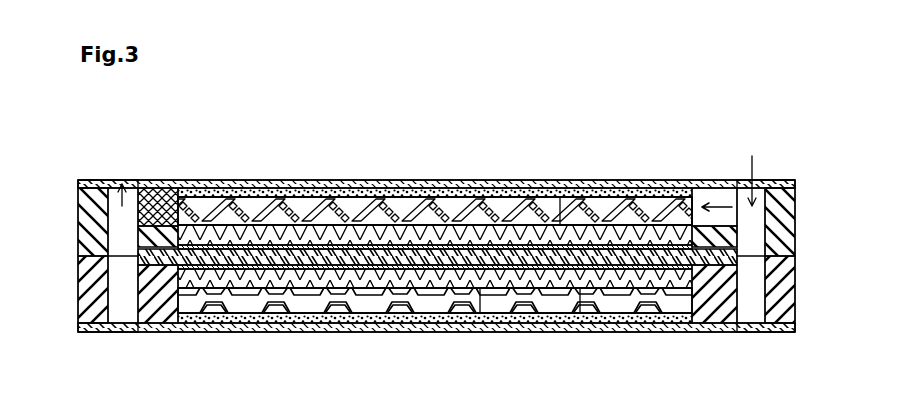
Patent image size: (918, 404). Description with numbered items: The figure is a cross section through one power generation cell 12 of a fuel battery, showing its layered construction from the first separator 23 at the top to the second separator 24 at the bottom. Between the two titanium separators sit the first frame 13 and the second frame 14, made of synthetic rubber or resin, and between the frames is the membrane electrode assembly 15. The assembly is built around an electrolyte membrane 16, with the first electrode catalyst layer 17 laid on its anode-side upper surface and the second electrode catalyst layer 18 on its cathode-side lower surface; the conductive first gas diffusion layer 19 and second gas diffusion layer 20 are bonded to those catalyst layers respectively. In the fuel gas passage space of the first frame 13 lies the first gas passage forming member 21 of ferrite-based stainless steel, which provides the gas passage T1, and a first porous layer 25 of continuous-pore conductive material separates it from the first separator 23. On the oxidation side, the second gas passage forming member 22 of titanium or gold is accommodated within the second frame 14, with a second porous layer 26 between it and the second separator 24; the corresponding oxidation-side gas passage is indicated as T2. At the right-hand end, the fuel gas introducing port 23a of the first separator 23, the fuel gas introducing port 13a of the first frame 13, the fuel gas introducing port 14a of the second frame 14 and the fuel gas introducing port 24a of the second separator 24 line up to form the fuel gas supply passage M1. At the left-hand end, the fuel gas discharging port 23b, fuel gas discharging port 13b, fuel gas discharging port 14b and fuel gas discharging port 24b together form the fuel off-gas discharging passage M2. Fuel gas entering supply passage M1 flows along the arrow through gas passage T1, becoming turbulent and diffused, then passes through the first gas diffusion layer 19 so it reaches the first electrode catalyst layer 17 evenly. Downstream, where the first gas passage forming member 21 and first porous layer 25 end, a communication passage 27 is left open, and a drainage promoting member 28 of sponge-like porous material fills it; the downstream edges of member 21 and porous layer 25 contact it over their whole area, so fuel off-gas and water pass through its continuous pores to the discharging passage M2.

The power generation cell 12 is at (553, 168).
The first frame 13 is at (441, 201).
The fuel gas introducing port 13a is at (781, 190).
The fuel gas discharging port 13b is at (110, 193).
The second frame 14 is at (442, 313).
The fuel gas introducing port 14a is at (800, 310).
The fuel gas discharging port 14b is at (116, 326).
The membrane electrode assembly 15 is at (450, 246).
The electrolyte membrane 16 is at (303, 222).
The first electrode catalyst layer 17 is at (358, 244).
The second electrode catalyst layer 18 is at (288, 282).
The first gas diffusion layer 19 is at (499, 256).
The second gas diffusion layer 20 is at (452, 300).
The first gas passage forming member 21 is at (588, 208).
The second gas passage forming member 22 is at (528, 306).
The first separator 23 is at (634, 185).
The fuel gas introducing port 23a is at (742, 183).
The fuel gas discharging port 23b is at (133, 182).
The second separator 24 is at (622, 331).
The fuel gas introducing port 24a is at (740, 328).
The fuel gas discharging port 24b is at (132, 331).
The first porous layer 25 is at (256, 192).
The second porous layer 26 is at (218, 328).
The communication passage 27 is at (152, 200).
The drainage promoting member 28 is at (174, 192).
The gas passage T1 is at (398, 217).
The thickness of lower electrode layer T2 is at (376, 292).
The fuel gas supply passage M1 is at (750, 169).
The fuel off-gas discharging passage M2 is at (127, 172).